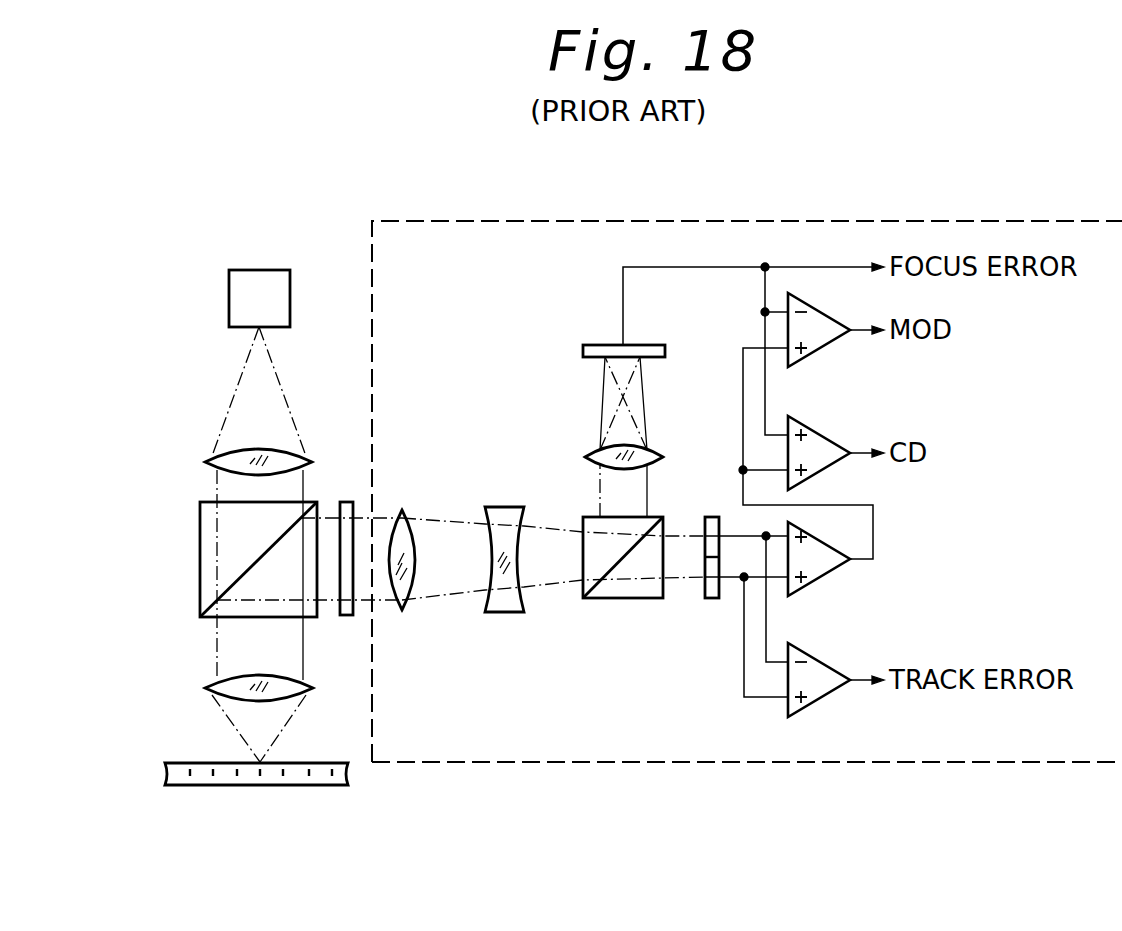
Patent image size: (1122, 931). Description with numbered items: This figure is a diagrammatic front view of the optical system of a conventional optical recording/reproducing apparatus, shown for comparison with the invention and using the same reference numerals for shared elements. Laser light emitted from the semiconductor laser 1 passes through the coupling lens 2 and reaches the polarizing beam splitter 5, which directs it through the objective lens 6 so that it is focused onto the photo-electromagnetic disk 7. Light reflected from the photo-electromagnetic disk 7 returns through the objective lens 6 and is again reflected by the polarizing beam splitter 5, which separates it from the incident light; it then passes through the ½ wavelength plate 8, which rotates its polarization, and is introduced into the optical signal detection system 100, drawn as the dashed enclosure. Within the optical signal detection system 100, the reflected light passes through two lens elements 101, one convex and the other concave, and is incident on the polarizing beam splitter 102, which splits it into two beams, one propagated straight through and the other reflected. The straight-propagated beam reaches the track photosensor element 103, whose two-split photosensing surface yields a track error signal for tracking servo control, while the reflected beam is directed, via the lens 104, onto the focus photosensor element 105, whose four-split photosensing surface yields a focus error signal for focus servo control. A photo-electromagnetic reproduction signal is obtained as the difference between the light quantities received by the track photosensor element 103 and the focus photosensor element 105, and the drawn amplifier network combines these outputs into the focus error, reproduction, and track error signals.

The semiconductor laser 1 is at (231, 283).
The coupling lens 2 is at (212, 458).
The polarizing beam splitter 5 is at (203, 520).
The objective lens 6 is at (212, 684).
The photo-electromagnetic disk 7 is at (203, 778).
The ½ wavelength plate 8 is at (346, 500).
The optical signal detection system 100 is at (753, 220).
The lens elements 101 is at (494, 508).
The polarizing beam splitter 102 is at (598, 600).
The track photosensor element 103 is at (686, 608).
The condenser lens 104 is at (597, 452).
The focus photosensor element 105 is at (592, 345).